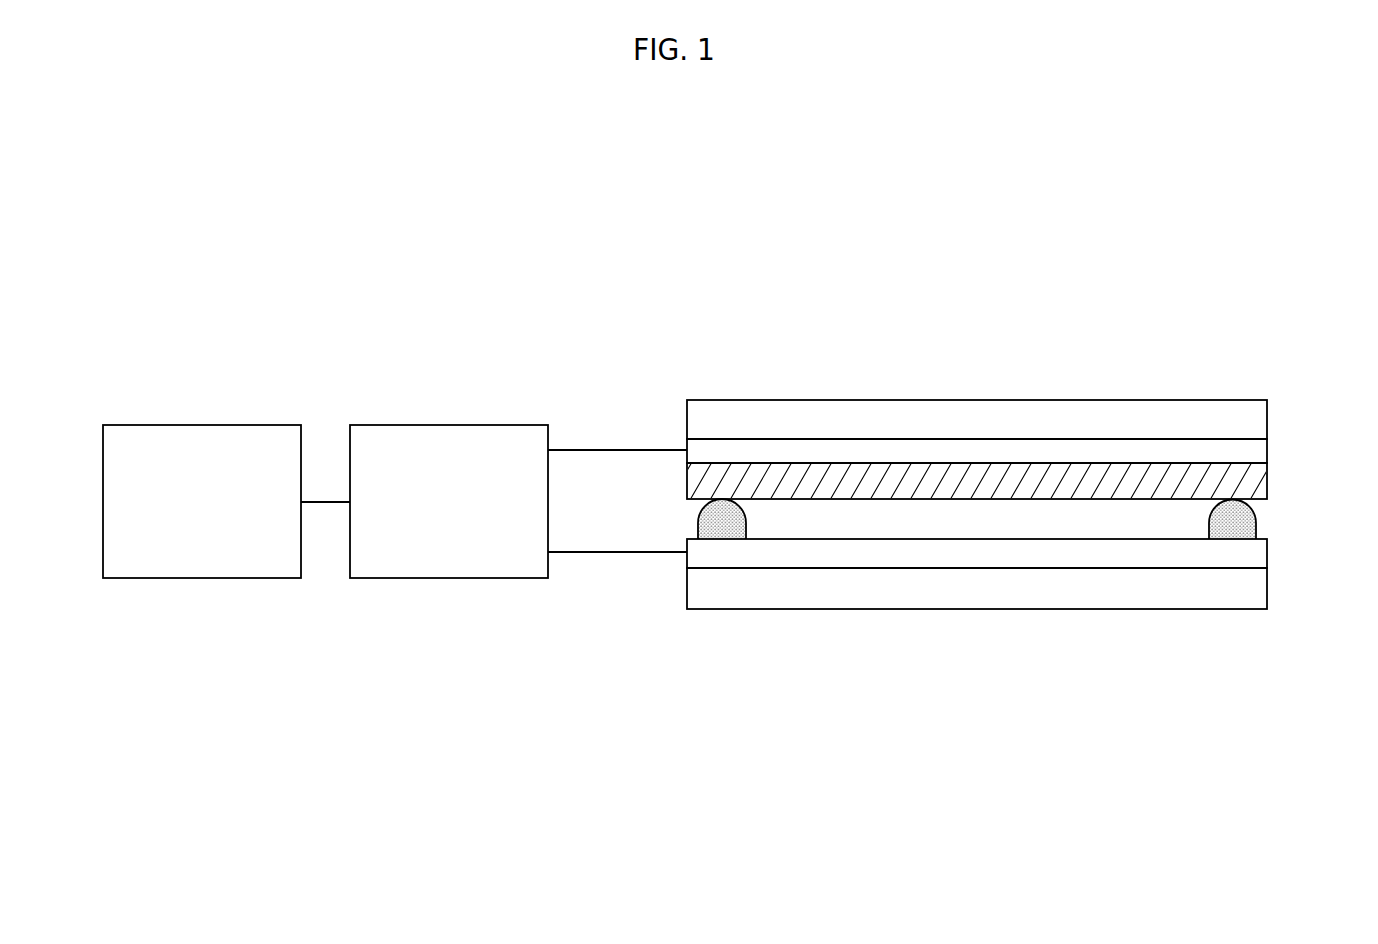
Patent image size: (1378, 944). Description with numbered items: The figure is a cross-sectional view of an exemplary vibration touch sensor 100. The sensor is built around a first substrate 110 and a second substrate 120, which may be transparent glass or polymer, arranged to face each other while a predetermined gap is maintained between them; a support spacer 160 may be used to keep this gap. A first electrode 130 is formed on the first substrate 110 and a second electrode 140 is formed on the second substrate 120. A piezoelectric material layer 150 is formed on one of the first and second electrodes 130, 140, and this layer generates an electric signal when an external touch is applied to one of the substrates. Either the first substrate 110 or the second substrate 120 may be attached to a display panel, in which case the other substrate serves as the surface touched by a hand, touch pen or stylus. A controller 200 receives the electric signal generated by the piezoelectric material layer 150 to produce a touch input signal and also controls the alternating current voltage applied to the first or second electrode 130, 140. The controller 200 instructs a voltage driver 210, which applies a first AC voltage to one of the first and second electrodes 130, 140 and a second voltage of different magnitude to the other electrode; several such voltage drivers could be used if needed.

The vibration touch sensor 100 is at (1021, 427).
The first substrate 110 is at (1261, 413).
The second substrate 120 is at (1261, 597).
The first electrode 130 is at (1261, 453).
The second electrode 140 is at (1261, 554).
The piezoelectric material layer 150 is at (1261, 485).
The support spacer 160 is at (1245, 525).
The controller 200 is at (200, 425).
The voltage driver 210 is at (447, 425).